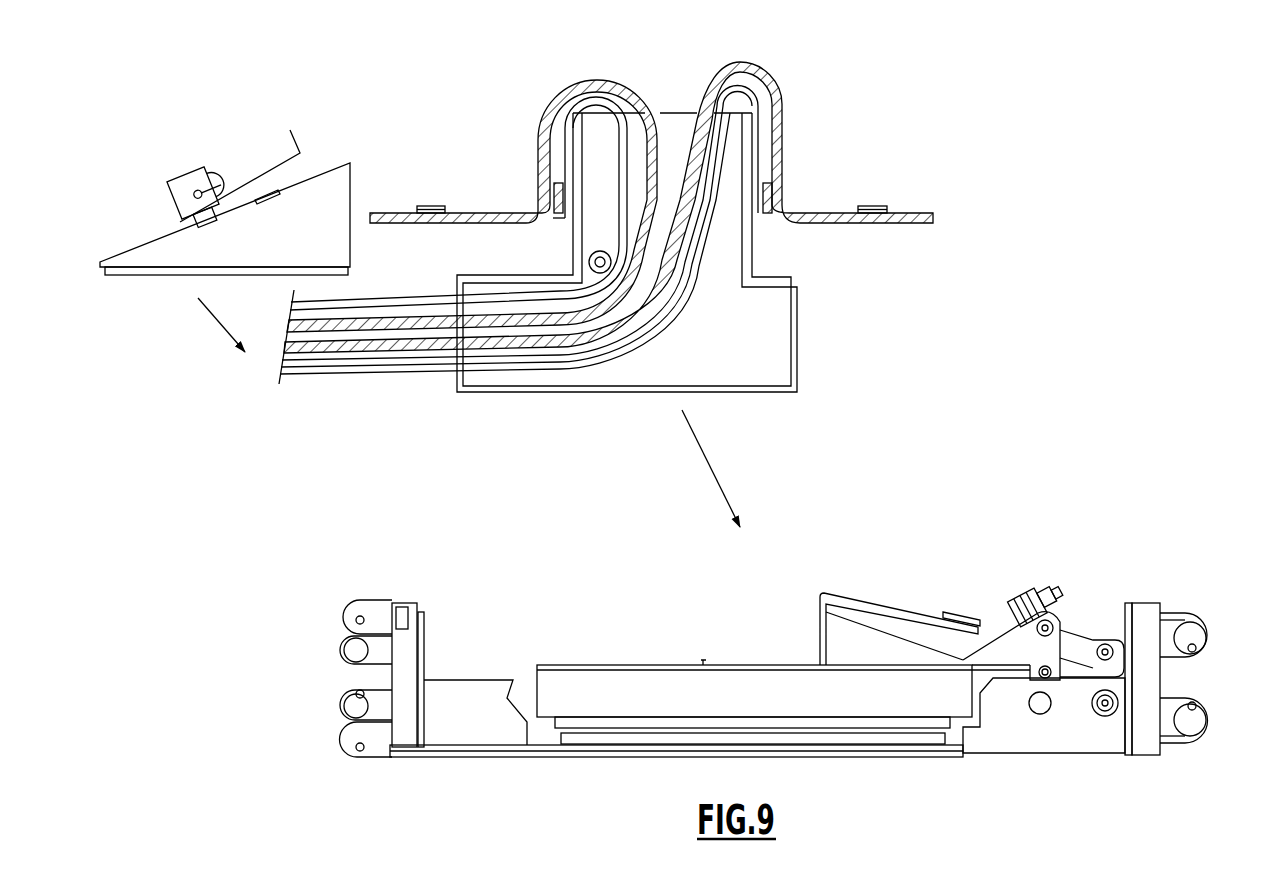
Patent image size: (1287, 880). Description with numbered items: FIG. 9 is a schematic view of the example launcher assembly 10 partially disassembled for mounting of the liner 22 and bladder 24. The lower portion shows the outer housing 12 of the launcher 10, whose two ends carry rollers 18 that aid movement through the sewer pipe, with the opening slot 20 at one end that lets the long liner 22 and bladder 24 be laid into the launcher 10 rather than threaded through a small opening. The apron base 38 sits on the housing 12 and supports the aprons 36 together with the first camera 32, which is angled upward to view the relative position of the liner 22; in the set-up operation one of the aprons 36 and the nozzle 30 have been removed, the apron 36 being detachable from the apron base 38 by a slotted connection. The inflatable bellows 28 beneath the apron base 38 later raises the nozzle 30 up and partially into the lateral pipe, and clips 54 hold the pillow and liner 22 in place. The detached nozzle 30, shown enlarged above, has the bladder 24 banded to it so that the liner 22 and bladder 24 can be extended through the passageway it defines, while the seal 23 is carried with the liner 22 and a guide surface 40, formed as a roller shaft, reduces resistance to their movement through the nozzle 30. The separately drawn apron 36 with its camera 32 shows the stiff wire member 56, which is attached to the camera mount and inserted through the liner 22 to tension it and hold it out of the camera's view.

The launcher assembly 10 is at (985, 517).
The outer housing 12 is at (483, 748).
The rollers 18 is at (338, 648).
The opening slot 20 is at (424, 584).
The liner 22 is at (778, 165).
The seal 23 is at (878, 206).
The bladder 24 is at (758, 142).
The inflatable bellows 28 is at (660, 737).
The nozzle 30 is at (749, 262).
The first camera 32 is at (186, 178).
The apron 36 is at (303, 198).
The apron base 38 is at (862, 697).
The guide surface 40 is at (588, 262).
The clips 54 is at (963, 618).
The stiff wire member 56 is at (268, 165).